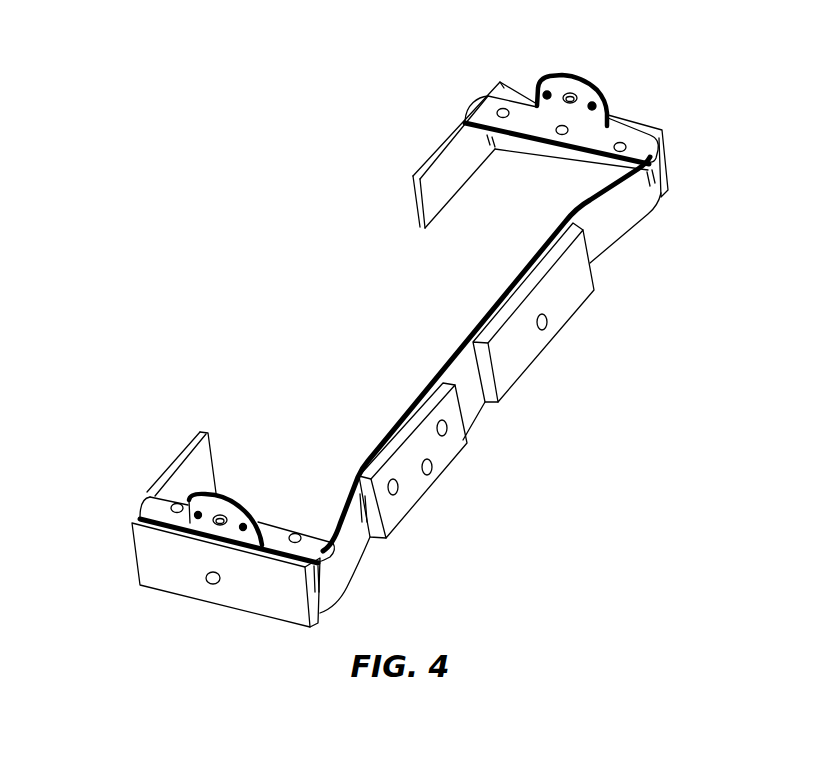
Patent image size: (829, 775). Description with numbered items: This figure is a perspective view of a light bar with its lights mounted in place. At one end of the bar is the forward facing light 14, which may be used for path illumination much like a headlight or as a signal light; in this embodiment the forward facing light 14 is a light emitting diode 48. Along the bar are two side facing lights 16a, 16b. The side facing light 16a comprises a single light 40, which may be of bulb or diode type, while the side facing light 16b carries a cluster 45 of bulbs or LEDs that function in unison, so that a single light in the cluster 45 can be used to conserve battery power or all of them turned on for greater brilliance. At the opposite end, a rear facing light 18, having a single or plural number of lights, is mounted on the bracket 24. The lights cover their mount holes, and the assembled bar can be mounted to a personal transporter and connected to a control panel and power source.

The forward facing light 14 is at (152, 561).
The side facing light 16a is at (520, 362).
The side facing light 16b is at (398, 508).
The rear facing light 18 is at (643, 125).
The bracket 24 is at (557, 76).
The single light 40 is at (549, 324).
The cluster 45 is at (400, 487).
The light emitting diode 48 is at (210, 583).